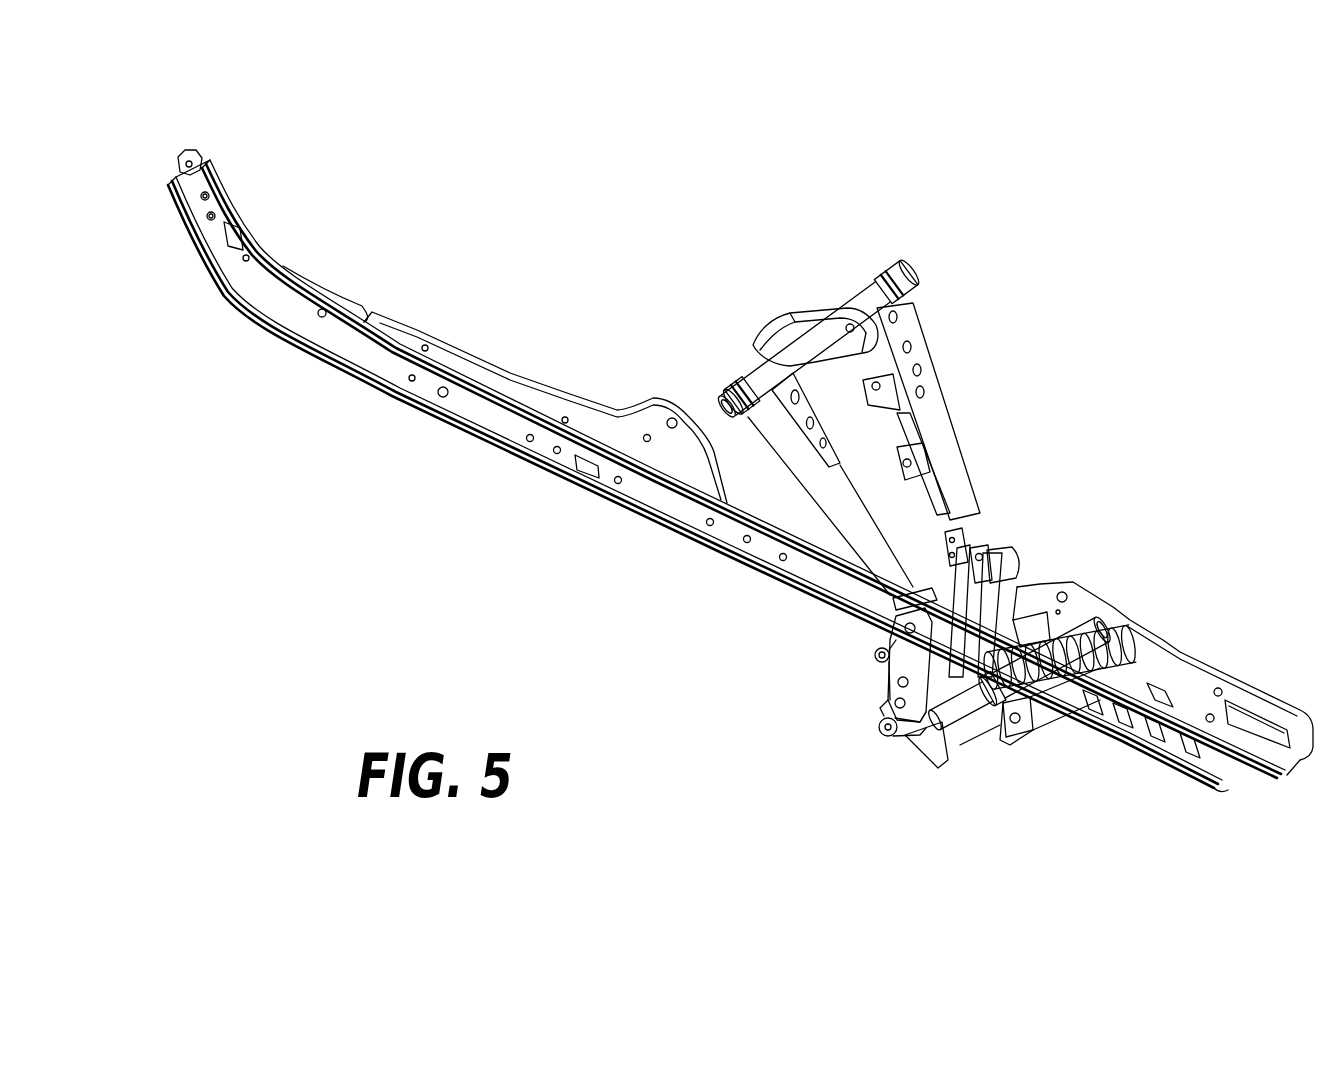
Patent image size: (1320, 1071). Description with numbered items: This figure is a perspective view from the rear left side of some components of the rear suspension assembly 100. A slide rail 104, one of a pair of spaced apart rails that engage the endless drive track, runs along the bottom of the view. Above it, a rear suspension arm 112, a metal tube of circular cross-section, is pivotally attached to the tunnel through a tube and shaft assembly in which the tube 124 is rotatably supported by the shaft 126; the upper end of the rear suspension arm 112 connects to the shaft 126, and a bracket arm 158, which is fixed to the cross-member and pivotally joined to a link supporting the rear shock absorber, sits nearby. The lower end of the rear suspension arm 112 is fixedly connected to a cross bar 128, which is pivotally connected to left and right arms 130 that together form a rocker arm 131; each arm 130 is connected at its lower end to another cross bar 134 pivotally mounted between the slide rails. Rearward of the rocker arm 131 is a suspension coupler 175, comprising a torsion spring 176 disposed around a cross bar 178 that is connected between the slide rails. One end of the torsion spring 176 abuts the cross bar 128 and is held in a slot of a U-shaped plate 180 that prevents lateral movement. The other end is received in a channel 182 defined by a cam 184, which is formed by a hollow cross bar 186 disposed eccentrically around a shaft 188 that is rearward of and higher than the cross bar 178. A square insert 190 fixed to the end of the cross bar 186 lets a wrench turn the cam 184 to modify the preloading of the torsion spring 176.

The rear suspension assembly 100 is at (799, 142).
The slide rail 104 is at (378, 312).
The rear suspension arm 112 is at (963, 433).
The tube 124 is at (873, 292).
The shaft 126 is at (922, 262).
The cross bar 128 is at (1000, 553).
The arm 130 is at (1012, 602).
The rocker arm 131 is at (863, 702).
The cross bar 134 is at (900, 738).
The bracket arm 158 is at (795, 330).
The suspension coupler 175 is at (1078, 622).
The torsion spring 176 is at (1066, 622).
The cross bar 178 is at (945, 738).
The U-shaped plate 180 is at (985, 555).
The channel 182 is at (1130, 653).
The cam 184 is at (1143, 632).
The cross bar 186 is at (1073, 712).
The shaft 188 is at (1014, 735).
The square insert 190 is at (1098, 735).